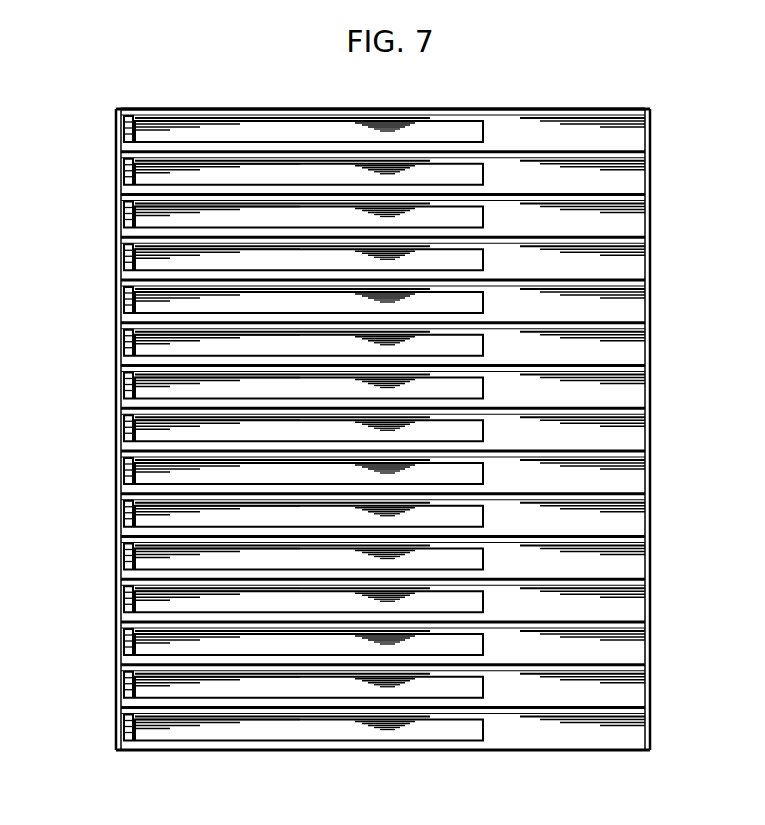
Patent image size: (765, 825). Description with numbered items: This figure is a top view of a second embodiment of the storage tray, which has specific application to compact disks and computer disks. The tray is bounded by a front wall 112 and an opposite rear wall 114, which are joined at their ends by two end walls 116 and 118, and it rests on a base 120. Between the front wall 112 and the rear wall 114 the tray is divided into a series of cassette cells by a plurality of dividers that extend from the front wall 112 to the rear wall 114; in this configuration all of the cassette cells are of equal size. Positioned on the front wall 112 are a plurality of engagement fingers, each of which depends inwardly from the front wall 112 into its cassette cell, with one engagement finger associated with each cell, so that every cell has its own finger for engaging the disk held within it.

The front wall 112 is at (116, 423).
The rear wall 114 is at (652, 388).
The end wall 116 is at (566, 752).
The end wall 118 is at (553, 107).
The base 120 is at (610, 178).